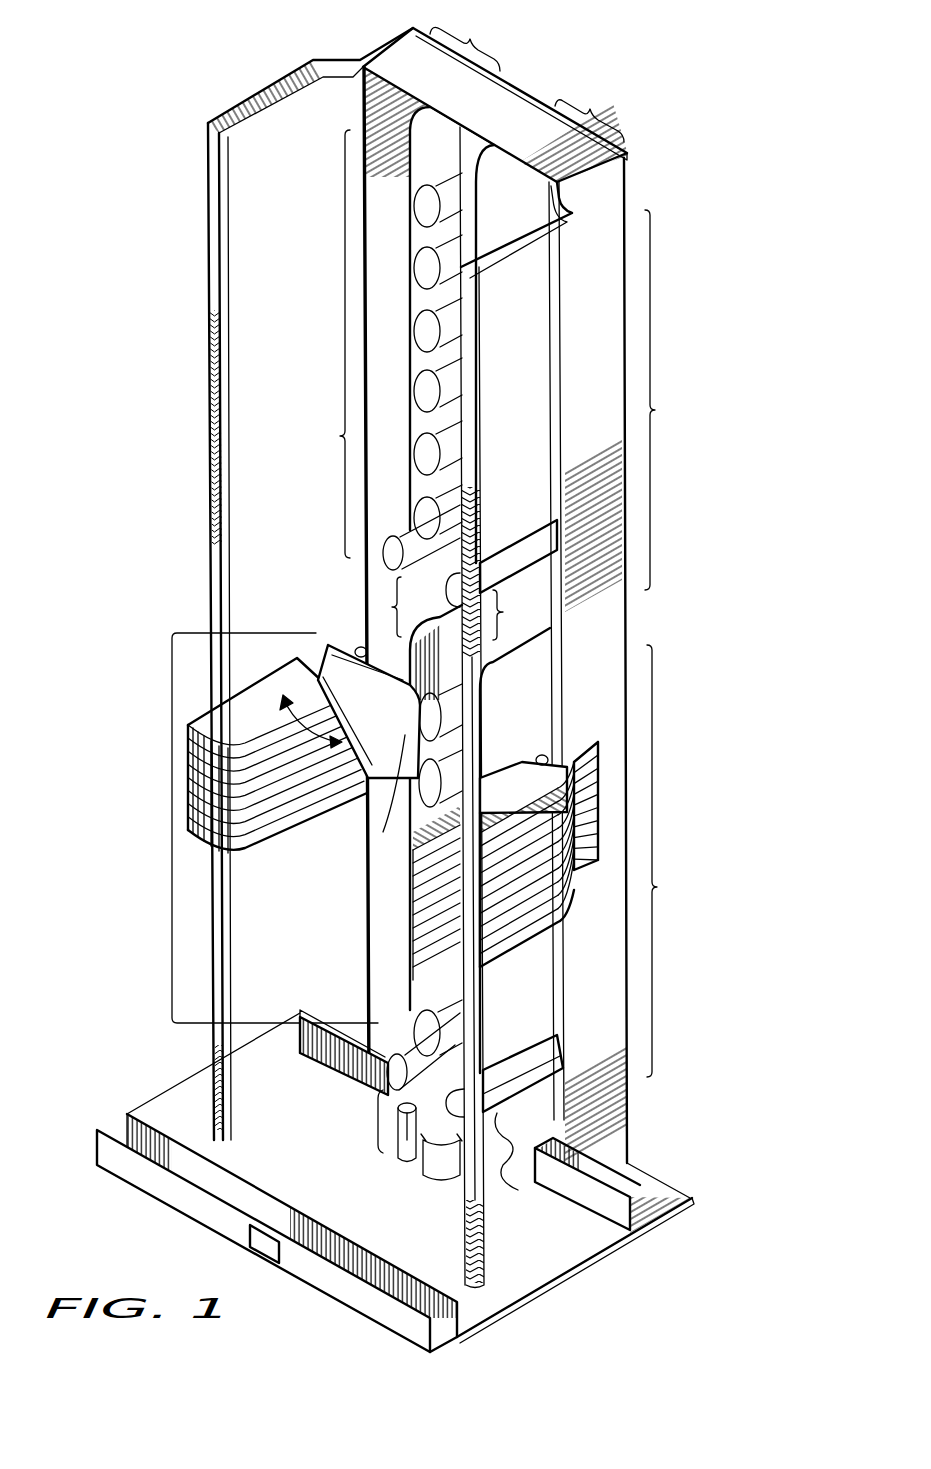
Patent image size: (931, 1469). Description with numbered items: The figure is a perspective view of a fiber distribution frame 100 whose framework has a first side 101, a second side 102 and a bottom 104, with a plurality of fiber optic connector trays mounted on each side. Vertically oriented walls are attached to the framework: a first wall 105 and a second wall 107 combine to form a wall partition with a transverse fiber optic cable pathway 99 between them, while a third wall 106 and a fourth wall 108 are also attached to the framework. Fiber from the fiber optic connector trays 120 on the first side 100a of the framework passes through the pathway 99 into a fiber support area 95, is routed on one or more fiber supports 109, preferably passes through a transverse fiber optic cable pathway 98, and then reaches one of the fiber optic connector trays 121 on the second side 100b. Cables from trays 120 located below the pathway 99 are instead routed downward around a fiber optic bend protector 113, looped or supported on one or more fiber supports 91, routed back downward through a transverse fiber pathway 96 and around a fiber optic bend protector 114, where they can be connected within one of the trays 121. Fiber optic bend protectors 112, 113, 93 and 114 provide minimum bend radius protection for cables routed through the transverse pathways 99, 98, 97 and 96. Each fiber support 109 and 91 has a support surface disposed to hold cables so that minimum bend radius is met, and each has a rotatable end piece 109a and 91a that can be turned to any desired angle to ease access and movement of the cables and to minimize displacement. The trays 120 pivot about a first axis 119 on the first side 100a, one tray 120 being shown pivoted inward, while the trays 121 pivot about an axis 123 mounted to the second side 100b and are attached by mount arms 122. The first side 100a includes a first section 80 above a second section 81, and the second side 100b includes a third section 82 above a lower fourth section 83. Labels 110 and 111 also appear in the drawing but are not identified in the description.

The fiber distribution frame 100 is at (528, 82).
The first side of framework 100a is at (503, 37).
The second side of framework 100b is at (628, 106).
The fiber support area 95 is at (470, 113).
The first wall 105 is at (458, 163).
The third wall 106 is at (528, 211).
The first side 101 is at (363, 238).
The second side 102 is at (593, 277).
The third section 82 is at (675, 400).
The lower magazine section 83 is at (676, 861).
The first section 80 is at (326, 344).
The guide rod 111 is at (463, 348).
The rotatable end piece 109a is at (410, 383).
The fiber supports 109 is at (450, 443).
The fiber optic bend protector 113 is at (512, 565).
The fiber optic bend protector 114 is at (520, 1077).
The left side wall 110 is at (209, 452).
The fiber optic bend protector 112 is at (383, 547).
The transverse fiber optic cable pathway 99 is at (392, 604).
The first axis 119 is at (357, 645).
The fiber optic connector trays 120 is at (402, 715).
The transverse fiber optic cable pathway 98 is at (515, 615).
The fourth wall 108 is at (537, 714).
The axis 123 is at (543, 752).
The fiber supports 91 is at (457, 708).
The mount arms 122 is at (590, 810).
The rotatable end piece 91a is at (383, 832).
The second section 81 is at (254, 828).
The second wall 107 is at (427, 998).
The fiber optic connector trays 121 is at (540, 855).
The fiber optic bend protector 93 is at (390, 1062).
The transverse fiber optic cable pathway 97 is at (380, 1122).
The bottom 104 is at (392, 1209).
The transverse fiber pathway 96 is at (520, 1160).